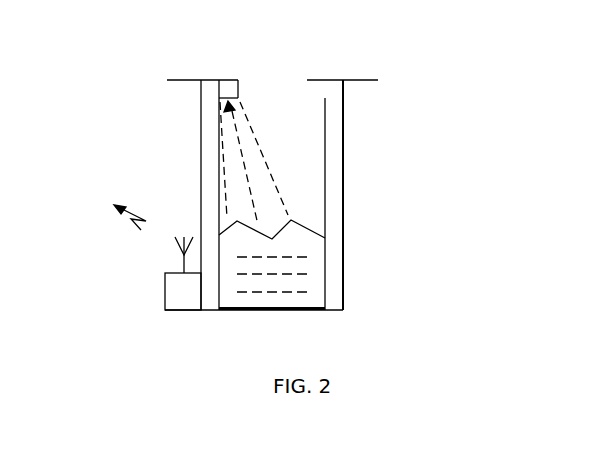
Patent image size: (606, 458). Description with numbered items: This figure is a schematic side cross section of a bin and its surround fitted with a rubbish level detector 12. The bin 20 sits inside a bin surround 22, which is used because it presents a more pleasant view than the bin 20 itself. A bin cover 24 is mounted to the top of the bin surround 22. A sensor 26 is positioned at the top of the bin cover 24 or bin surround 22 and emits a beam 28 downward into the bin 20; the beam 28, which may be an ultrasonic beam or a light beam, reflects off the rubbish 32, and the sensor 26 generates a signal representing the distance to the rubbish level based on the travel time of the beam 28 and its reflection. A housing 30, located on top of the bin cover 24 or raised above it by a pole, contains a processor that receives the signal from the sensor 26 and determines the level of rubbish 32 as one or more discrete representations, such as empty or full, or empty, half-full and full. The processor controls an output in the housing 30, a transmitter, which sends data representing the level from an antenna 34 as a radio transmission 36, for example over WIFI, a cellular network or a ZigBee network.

The level sensing system 12 is at (436, 224).
The bin 20 is at (325, 280).
The bin surround 22 is at (343, 167).
The bin cover 24 is at (185, 80).
The sensor 26 is at (229, 90).
The beam 28 is at (258, 205).
The housing 30 is at (165, 290).
The rubbish 32 is at (272, 260).
The antenna 34 is at (181, 233).
The radio transmission 36 is at (167, 238).